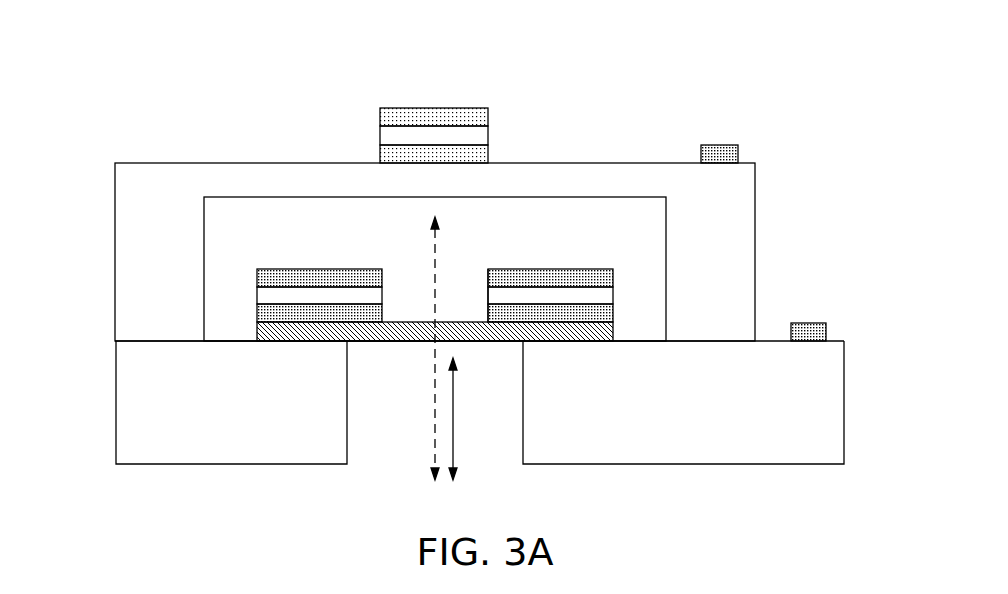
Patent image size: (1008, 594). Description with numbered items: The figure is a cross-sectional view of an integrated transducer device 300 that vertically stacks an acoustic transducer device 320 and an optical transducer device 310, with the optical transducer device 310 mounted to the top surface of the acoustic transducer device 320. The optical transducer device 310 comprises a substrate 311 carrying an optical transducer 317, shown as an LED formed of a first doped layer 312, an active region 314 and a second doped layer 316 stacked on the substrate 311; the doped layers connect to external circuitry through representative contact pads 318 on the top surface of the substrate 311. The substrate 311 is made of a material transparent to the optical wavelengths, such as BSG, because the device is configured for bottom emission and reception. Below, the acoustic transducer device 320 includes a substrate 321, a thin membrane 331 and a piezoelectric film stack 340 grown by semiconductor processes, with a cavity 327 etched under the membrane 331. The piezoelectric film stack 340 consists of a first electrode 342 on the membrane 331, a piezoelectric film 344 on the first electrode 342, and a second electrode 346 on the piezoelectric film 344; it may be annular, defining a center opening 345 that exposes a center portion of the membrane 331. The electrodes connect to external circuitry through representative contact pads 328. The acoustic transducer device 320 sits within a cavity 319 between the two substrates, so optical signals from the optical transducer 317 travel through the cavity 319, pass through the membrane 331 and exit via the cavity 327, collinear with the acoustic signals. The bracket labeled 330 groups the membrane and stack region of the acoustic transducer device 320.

The integrated transducer device 300 is at (486, 72).
The optical transducer device 310 is at (724, 109).
The substrate 311 is at (115, 180).
The first doped layer 312 is at (380, 143).
The active region 314 is at (380, 126).
The second doped layer 316 is at (417, 106).
The optical transducer 317 is at (490, 108).
The contact pads 318 is at (720, 164).
The cavity 319 is at (557, 215).
The acoustic transducer device 320 is at (812, 268).
The substrate 321 is at (115, 393).
The cavity 327 is at (401, 447).
The contact pads 328 is at (807, 342).
The resonator structure 330 is at (686, 340).
The membrane 331 is at (310, 342).
The piezoelectric film stack 340 is at (617, 269).
The first electrode 342 is at (273, 302).
The piezoelectric film 344 is at (275, 287).
The center opening 345 is at (488, 284).
The second electrode 346 is at (328, 268).